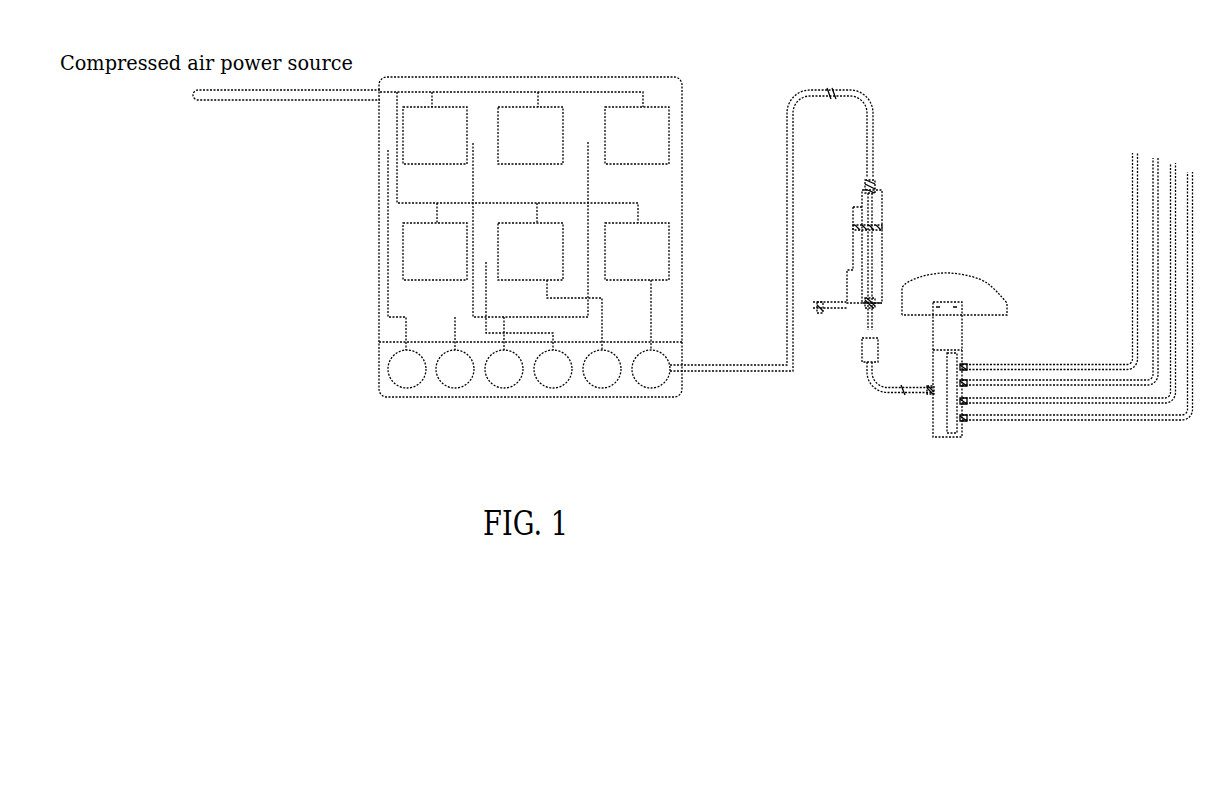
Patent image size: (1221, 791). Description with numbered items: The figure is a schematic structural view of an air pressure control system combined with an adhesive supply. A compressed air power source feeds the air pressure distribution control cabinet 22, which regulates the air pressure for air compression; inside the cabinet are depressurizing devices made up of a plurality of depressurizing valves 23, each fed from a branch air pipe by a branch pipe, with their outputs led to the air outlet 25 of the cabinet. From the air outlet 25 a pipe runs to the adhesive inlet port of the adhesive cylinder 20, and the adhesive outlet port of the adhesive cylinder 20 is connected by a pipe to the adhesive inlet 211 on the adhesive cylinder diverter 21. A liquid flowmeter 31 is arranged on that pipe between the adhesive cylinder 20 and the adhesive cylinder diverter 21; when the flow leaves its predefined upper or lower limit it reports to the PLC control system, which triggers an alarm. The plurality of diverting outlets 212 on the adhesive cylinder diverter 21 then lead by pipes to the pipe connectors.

The adhesive cylinder 20 is at (887, 240).
The adhesive cylinder diverter 21 is at (935, 437).
The adhesive inlet 211 is at (927, 397).
The diverting outlets 212 is at (965, 420).
The air pressure distribution control cabinet 22 is at (550, 76).
The depressurizing valves 23 is at (525, 143).
The air outlet 25 is at (651, 369).
The liquid flowmeter 31 is at (862, 350).